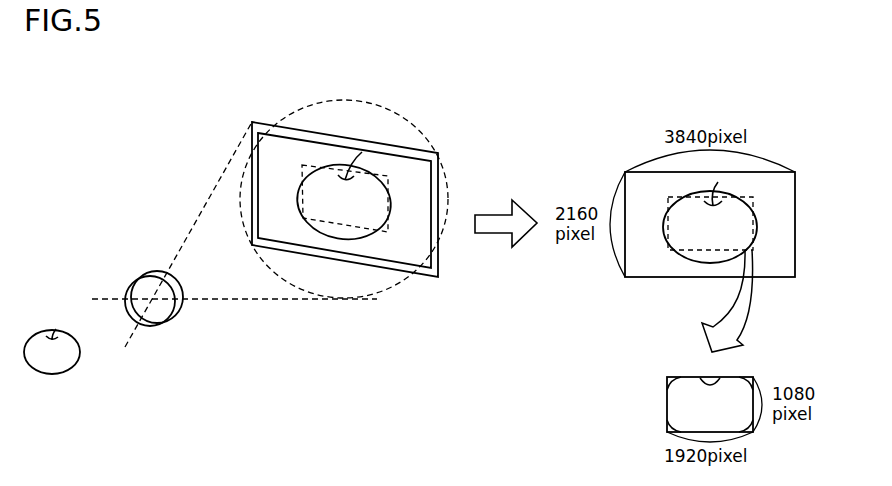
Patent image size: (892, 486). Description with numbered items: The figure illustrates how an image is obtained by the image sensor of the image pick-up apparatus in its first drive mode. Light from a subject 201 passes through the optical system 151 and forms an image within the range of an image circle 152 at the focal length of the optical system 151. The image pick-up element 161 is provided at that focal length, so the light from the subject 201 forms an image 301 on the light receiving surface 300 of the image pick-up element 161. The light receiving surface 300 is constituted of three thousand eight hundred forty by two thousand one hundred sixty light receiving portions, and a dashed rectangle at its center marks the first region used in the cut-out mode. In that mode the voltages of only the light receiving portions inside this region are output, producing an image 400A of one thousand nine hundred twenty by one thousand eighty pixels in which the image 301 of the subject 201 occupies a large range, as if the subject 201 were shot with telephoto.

The image circle 152 is at (315, 100).
The image 301 is at (362, 168).
The image pick-up element 161 is at (400, 145).
The light receiving surface 300 is at (392, 264).
The optical system 151 is at (147, 272).
The subject 201 is at (50, 375).
The image 400A is at (668, 378).